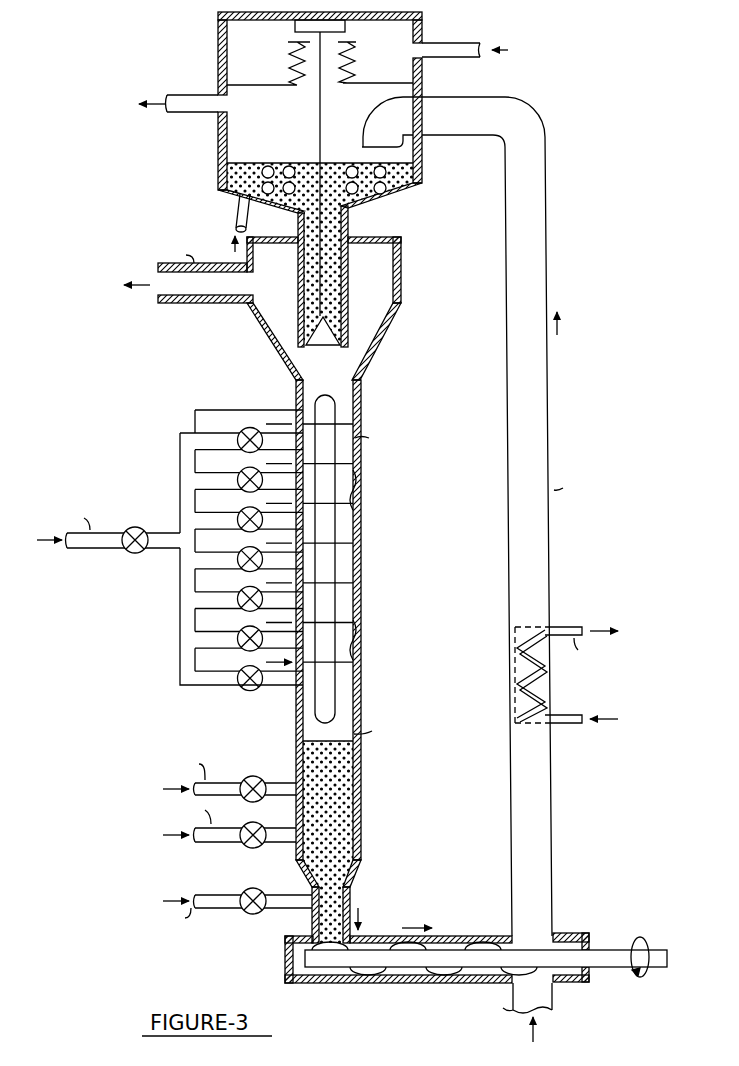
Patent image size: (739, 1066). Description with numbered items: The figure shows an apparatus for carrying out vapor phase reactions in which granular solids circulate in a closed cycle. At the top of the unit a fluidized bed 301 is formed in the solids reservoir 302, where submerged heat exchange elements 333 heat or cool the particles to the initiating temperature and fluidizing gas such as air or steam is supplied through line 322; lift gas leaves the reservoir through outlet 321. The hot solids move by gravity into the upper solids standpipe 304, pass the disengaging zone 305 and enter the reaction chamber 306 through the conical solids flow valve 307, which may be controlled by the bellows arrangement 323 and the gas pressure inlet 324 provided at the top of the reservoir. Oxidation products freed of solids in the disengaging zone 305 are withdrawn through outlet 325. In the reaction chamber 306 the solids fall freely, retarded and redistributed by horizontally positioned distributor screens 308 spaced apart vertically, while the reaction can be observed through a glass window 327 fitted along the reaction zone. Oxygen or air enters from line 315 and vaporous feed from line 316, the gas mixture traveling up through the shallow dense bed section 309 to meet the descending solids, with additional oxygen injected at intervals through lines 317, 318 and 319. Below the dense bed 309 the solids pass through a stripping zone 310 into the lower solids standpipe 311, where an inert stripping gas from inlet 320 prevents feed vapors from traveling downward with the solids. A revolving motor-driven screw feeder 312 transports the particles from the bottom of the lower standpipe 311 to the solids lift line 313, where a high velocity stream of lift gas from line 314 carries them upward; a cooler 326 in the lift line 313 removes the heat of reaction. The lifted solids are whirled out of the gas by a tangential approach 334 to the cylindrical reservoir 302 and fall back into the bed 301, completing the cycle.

The fluidized bed 301 is at (250, 166).
The solids reservoir 302 is at (217, 139).
The upper solids standpipe 304 is at (349, 224).
The disengaging zone 305 is at (402, 262).
The reaction chamber 306 is at (350, 400).
The conical solids flow valve 307 is at (338, 353).
The distributor screens 308 is at (354, 495).
The shallow dense bed section 309 is at (354, 800).
The stripping zone 310 is at (361, 870).
The lower solids standpipe 311 is at (310, 921).
The screw feeder 312 is at (465, 936).
The solids lift line 313 is at (553, 451).
The lift gas line 314 is at (553, 1006).
The oxygen line 315 is at (227, 782).
The feed line 316 is at (220, 843).
The oxygen injection line 317 is at (95, 549).
The oxygen injection line 318 is at (198, 688).
The oxygen injection line 319 is at (211, 648).
The stripping gas inlet 320 is at (220, 894).
The lift gas outlet 321 is at (200, 95).
The fluidizing gas line 322 is at (233, 213).
The bellows arrangement 323 is at (350, 50).
The gas pressure inlet 324 is at (451, 44).
The products outlet 325 is at (185, 304).
The cooler 326 is at (571, 625).
The glass window 327 is at (335, 554).
The heat exchange elements 333 is at (388, 188).
The tangential approach 334 is at (375, 153).